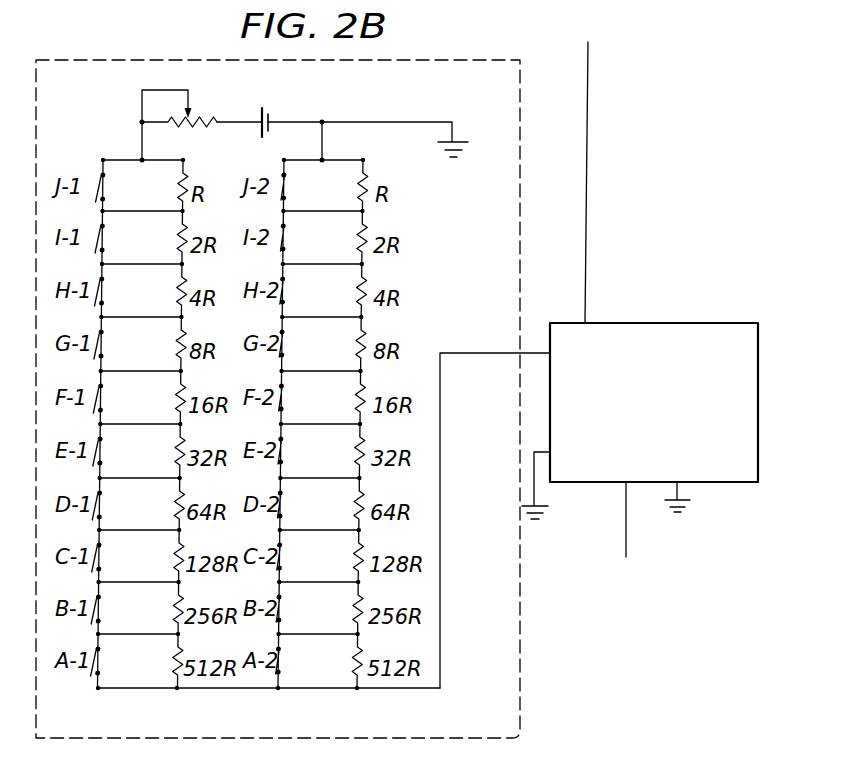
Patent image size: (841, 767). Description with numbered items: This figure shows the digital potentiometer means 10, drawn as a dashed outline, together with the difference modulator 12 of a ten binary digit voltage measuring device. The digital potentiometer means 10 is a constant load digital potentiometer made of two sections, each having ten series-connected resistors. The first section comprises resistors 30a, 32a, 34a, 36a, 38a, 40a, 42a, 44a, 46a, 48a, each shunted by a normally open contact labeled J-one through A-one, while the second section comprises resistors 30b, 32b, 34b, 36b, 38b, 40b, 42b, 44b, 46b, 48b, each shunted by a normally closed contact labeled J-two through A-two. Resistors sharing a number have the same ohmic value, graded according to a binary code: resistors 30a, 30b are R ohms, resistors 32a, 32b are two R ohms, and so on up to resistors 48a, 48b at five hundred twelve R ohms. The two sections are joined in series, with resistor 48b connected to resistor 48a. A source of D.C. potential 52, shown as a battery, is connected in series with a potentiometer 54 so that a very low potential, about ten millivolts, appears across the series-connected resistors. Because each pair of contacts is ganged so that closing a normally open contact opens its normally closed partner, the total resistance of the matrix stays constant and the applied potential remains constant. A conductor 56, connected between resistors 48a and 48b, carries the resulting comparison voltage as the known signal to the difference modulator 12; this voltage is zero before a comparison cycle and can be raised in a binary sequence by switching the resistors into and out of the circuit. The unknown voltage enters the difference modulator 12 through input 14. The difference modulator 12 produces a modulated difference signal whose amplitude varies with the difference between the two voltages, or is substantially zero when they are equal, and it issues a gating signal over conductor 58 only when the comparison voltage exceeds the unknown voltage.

The digital potentiometer means 10 is at (115, 58).
The difference modulator 12 is at (663, 322).
The input 14 is at (625, 521).
The resistor 30a is at (141, 185).
The resistor 32a is at (141, 236).
The resistor 34a is at (140, 289).
The resistor 36a is at (140, 342).
The resistor 38a is at (139, 396).
The resistor 40a is at (139, 449).
The resistor 42a is at (138, 503).
The resistor 44a is at (138, 555).
The resistor 46a is at (137, 607).
The resistor 48a is at (137, 659).
The resistor 30b is at (324, 185).
The resistor 32b is at (323, 236).
The resistor 34b is at (323, 289).
The resistor 36b is at (322, 342).
The resistor 38b is at (321, 396).
The resistor 40b is at (321, 449).
The resistor 42b is at (320, 503).
The resistor 44b is at (320, 555).
The resistor 46b is at (319, 607).
The resistor 48b is at (319, 659).
The source of D.C. potential 52 is at (275, 120).
The potentiometer 54 is at (199, 117).
The conductor 56 is at (441, 481).
The conductor 58 is at (588, 141).